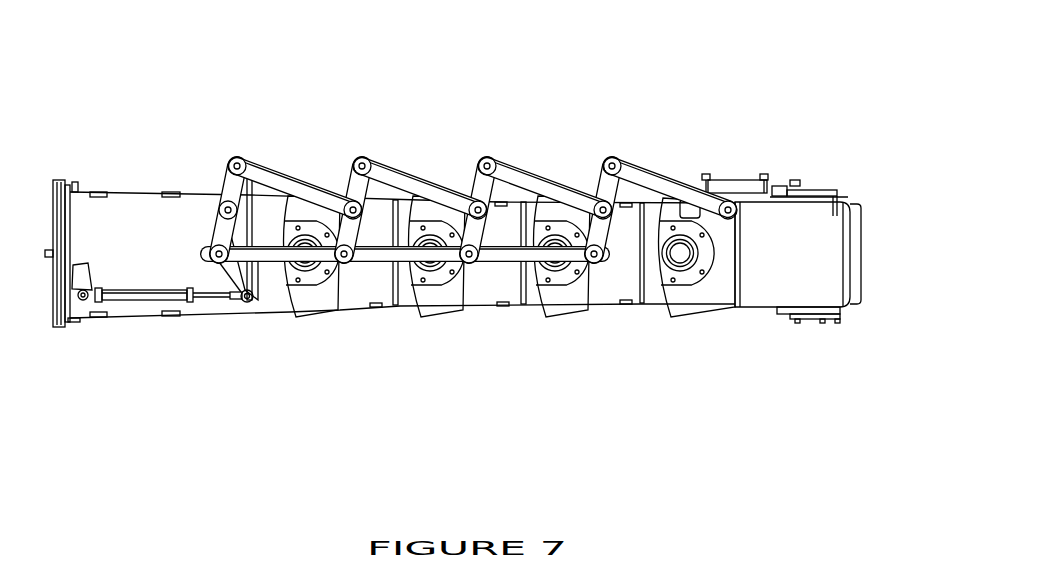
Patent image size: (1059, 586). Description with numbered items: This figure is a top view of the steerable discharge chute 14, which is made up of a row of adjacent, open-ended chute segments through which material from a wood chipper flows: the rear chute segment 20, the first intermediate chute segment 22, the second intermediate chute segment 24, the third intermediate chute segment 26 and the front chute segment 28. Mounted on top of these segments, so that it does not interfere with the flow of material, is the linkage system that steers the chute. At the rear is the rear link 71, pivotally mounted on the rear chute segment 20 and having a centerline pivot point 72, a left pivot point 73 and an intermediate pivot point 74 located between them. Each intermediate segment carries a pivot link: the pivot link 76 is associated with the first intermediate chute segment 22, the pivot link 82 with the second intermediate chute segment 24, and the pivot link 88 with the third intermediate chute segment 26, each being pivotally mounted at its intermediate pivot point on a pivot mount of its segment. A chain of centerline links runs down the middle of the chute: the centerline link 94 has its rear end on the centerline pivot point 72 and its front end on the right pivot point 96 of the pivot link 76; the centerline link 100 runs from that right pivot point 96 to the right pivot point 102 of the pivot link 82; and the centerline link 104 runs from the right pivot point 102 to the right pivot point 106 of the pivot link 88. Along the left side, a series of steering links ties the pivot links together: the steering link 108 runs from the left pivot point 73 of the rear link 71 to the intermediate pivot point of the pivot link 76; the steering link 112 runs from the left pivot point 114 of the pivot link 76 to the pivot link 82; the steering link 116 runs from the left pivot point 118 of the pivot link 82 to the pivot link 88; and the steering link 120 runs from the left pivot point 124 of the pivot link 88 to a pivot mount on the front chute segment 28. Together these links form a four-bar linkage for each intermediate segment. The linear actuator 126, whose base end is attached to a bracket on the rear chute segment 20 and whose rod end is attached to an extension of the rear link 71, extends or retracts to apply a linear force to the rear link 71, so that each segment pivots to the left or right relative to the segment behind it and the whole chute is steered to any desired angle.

The discharge chute 14 is at (641, 54).
The rear chute segment 20 is at (137, 263).
The first intermediate chute segment 22 is at (323, 300).
The second intermediate chute segment 24 is at (440, 300).
The third intermediate chute segment 26 is at (575, 302).
The front chute segment 28 is at (723, 297).
The rear link 71 is at (232, 186).
The centerline pivot point 72 is at (209, 253).
The left pivot point 73 is at (237, 161).
The intermediate pivot point 74 is at (222, 201).
The pivot link 76 is at (356, 184).
The pivot link 82 is at (479, 181).
The pivot link 88 is at (597, 186).
The centerline link 94 is at (273, 293).
The right pivot point 96 is at (344, 263).
The centerline link 100 is at (378, 256).
The right pivot point 102 is at (469, 263).
The centerline link 104 is at (508, 256).
The right pivot point 106 is at (600, 263).
The steering link 108 is at (285, 175).
The steering link 112 is at (408, 175).
The left pivot point 114 is at (362, 161).
The steering link 116 is at (534, 178).
The left pivot point 118 is at (487, 161).
The steering link 120 is at (680, 190).
The left pivot point 124 is at (612, 161).
The linear actuator 126 is at (125, 300).